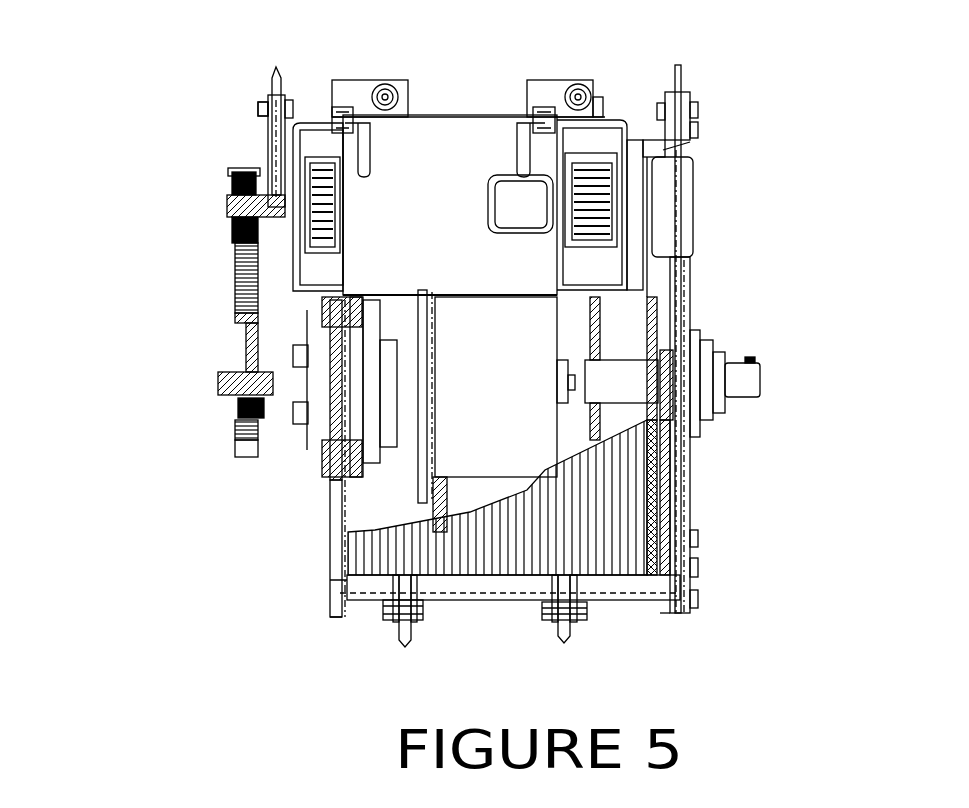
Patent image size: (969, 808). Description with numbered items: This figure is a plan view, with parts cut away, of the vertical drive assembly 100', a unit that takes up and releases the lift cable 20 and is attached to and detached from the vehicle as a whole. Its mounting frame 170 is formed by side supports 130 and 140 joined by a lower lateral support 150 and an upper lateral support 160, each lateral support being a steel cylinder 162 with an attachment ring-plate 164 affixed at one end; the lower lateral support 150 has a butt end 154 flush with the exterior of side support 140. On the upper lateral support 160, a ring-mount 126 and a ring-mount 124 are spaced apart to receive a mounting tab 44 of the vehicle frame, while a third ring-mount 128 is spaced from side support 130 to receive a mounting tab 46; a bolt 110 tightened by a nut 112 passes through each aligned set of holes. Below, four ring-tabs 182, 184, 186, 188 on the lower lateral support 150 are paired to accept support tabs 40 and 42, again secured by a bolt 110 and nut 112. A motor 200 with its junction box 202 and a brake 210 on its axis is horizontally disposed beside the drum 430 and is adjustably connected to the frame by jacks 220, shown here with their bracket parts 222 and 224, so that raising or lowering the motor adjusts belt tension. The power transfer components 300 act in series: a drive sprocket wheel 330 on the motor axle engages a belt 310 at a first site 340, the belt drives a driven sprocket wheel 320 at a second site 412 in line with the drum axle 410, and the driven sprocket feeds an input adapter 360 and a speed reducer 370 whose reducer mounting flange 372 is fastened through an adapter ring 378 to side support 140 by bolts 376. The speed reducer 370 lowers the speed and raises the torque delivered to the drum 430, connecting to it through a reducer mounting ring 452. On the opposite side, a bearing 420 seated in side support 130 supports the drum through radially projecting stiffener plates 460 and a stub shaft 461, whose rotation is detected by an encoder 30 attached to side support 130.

The lift cable 20 is at (685, 485).
The encoder 30 is at (760, 378).
The support tab 40 is at (410, 633).
The support tab 42 is at (578, 625).
The mounting tab 44 is at (272, 72).
The mounting tab 46 is at (682, 75).
The vertical drive assembly 100' is at (797, 40).
The bolt 110 is at (258, 113).
The nut 112 is at (292, 108).
The ring-mount 124 is at (288, 100).
The ring-mount 126 is at (262, 108).
The ring-mount 128 is at (680, 75).
The side support 130 is at (693, 262).
The side support 140 is at (427, 345).
The lower lateral support 150 is at (500, 590).
The butt end 154 is at (330, 580).
The upper lateral support 160 is at (663, 150).
The steel cylinder 162 is at (690, 142).
The attachment ring-plate 164 is at (680, 520).
The vertical drive assembly mounting frame 170 is at (327, 548).
The ring-tab 182 is at (353, 602).
The ring-tab 184 is at (447, 580).
The ring-tab 186 is at (545, 585).
The ring-tab 188 is at (657, 585).
The motor 200 is at (435, 117).
The junction box 202 is at (525, 217).
The brake 210 is at (693, 187).
The jack 220 is at (400, 90).
The bracket 222 is at (360, 82).
The bracket 224 is at (556, 82).
The power transfer components 300 is at (122, 368).
The belt 310 is at (238, 267).
The driven sprocket wheel 320 is at (240, 407).
The drive sprocket wheel 330 is at (230, 188).
The first site 340 is at (230, 222).
The input adapter 360 is at (323, 440).
The speed reducer 370 is at (327, 485).
The reducer mounting flange 372 is at (330, 462).
The bolts 376 is at (235, 322).
The adapter ring 378 is at (237, 440).
The drum axle 410 is at (218, 392).
The second site 412 is at (214, 372).
The bearing 420 is at (712, 345).
The drum 430 is at (327, 565).
The reducer mounting ring 452 is at (328, 512).
The stiffener plates 460 is at (627, 357).
The stub shaft 461 is at (660, 345).